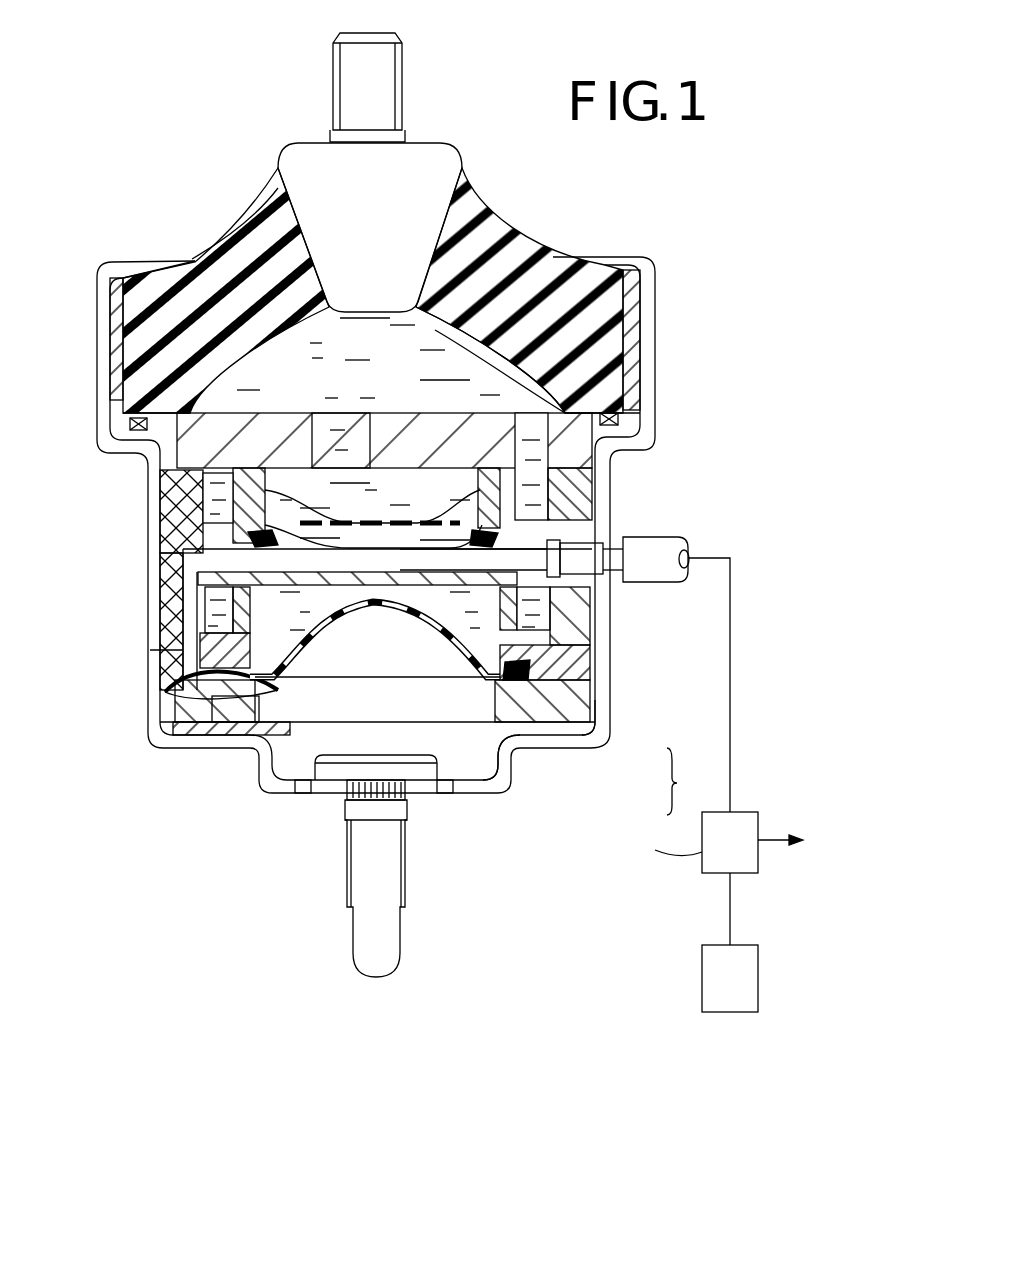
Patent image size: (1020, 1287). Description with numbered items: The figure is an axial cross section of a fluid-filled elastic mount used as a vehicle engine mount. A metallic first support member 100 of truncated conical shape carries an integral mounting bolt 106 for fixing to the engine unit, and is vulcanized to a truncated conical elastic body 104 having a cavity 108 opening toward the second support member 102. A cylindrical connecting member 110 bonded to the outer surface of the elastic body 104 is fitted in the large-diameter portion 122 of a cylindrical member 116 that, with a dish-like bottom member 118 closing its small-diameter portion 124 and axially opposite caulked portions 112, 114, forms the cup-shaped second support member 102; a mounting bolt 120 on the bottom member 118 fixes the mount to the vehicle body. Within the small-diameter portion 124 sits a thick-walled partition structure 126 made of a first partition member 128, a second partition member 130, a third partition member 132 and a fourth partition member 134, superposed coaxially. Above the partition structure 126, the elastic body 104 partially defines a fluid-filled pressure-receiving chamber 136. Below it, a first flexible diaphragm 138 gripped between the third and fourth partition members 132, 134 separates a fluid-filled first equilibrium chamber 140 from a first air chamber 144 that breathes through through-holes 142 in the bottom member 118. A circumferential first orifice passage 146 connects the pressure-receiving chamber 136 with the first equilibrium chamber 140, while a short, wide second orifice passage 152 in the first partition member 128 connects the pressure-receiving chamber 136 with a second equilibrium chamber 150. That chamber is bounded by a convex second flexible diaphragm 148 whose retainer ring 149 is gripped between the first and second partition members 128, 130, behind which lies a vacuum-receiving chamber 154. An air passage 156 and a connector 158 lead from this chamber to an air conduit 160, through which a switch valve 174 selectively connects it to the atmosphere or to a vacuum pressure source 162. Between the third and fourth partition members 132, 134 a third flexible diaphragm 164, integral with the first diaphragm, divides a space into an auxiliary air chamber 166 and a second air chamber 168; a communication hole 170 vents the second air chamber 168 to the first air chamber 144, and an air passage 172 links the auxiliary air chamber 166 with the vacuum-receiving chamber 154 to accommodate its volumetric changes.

The first support member 100 is at (437, 128).
The second support member 102 is at (696, 781).
The elastic body 104 is at (510, 255).
The mounting bolt 106 is at (368, 55).
The cavity 108 is at (313, 473).
The connecting member 110 is at (635, 300).
The caulked portion 112 is at (135, 262).
The caulked portion 114 is at (200, 742).
The cylindrical member 116 is at (625, 718).
The bottom member 118 is at (516, 771).
The mounting bolt 120 is at (370, 877).
The large-diameter portion 122 is at (90, 285).
The small-diameter portion 124 is at (230, 578).
The partition structure 126 is at (507, 400).
The first partition member 128 is at (178, 457).
The second partition member 130 is at (572, 480).
The third partition member 132 is at (580, 660).
The fourth partition member 134 is at (580, 695).
The pressure-receiving chamber 136 is at (437, 330).
The first flexible diaphragm 138 is at (458, 700).
The first variable-volume equilibrium chamber 140 is at (452, 625).
The through-holes 142 is at (307, 790).
The first air chamber 144 is at (392, 702).
The first orifice passage 146 is at (258, 505).
The second flexible diaphragm 148 is at (478, 510).
The retainer ring 149 is at (230, 590).
The second variable-volume equilibrium chamber 150 is at (293, 407).
The second orifice passage 152 is at (357, 420).
The vacuum-receiving chamber 154 is at (215, 498).
The air passage 156 is at (603, 533).
The connector 158 is at (590, 605).
The air conduit 160 is at (750, 630).
The vacuum pressure source 162 is at (710, 1008).
The third flexible diaphragm 164 is at (195, 700).
The auxiliary air chamber 166 is at (225, 665).
The second air chamber 168 is at (160, 727).
The communication hole 170 is at (238, 712).
The air passage 172 is at (185, 622).
The switch valve 174 is at (713, 867).